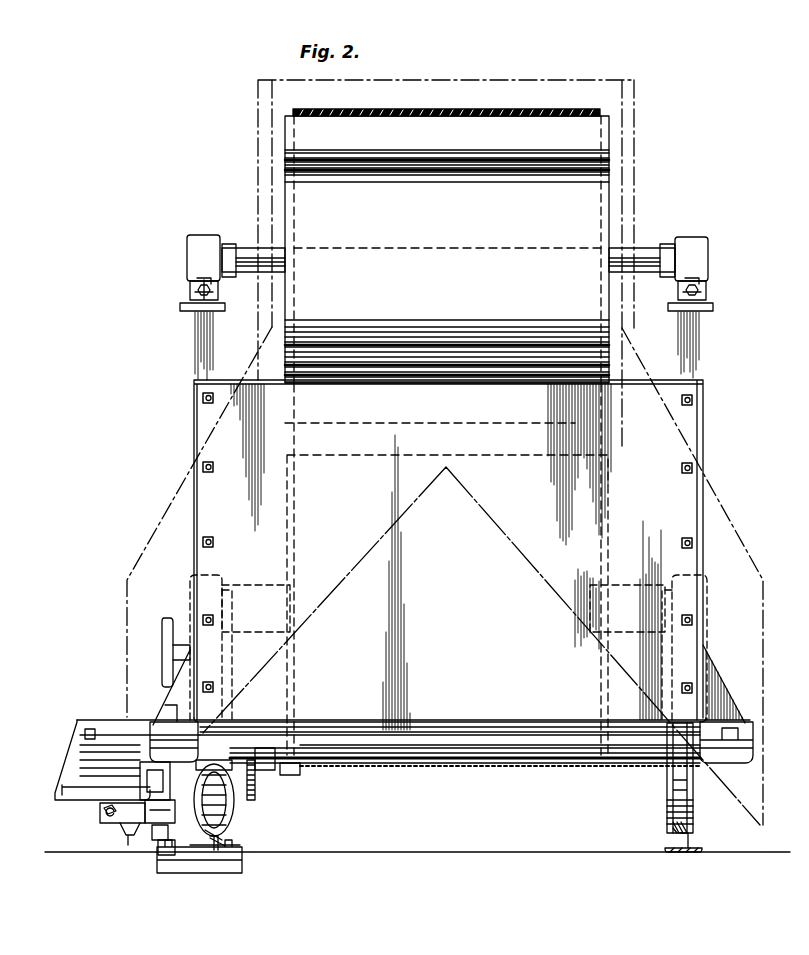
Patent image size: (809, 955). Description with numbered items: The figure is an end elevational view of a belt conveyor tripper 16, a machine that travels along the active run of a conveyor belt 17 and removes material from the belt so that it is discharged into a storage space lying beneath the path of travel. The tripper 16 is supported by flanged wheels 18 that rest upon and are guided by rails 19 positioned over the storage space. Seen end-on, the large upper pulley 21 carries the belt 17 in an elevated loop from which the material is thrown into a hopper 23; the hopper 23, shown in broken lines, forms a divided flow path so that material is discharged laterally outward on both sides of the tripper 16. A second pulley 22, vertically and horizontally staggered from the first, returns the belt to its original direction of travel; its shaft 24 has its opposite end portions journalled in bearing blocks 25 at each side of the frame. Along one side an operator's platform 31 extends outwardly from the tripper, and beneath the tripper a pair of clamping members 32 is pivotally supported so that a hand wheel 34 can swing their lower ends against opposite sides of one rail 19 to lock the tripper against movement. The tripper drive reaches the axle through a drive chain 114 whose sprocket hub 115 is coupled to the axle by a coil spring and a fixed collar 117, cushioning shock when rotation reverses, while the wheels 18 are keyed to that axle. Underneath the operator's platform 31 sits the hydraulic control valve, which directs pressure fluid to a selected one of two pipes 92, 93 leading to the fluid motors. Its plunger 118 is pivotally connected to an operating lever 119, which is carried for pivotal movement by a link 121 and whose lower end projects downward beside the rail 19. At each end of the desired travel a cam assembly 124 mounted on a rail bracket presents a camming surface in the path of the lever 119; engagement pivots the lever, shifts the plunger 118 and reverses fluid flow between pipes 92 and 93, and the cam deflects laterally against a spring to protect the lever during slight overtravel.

The belt conveyor tripper 16 is at (715, 403).
The conveyor belt 17 is at (538, 109).
The flanged wheels 18 is at (232, 818).
The rails 19 is at (212, 856).
The pulley 21 is at (610, 131).
The pulley 22 is at (410, 724).
The hopper 23 is at (715, 483).
The shaft 24 is at (298, 585).
The bearing blocks 25 is at (224, 575).
The operator's platform 31 is at (80, 797).
The clamping members 32 is at (232, 808).
The hand wheel 34 is at (163, 623).
The pipe 92 is at (120, 815).
The pipe 93 is at (125, 835).
The drive chain 114 is at (256, 789).
The hub 115 is at (265, 770).
The collar 117 is at (292, 773).
The plunger 118 is at (145, 832).
The operating lever 119 is at (165, 856).
The link 121 is at (163, 792).
The cam assembly 124 is at (157, 840).